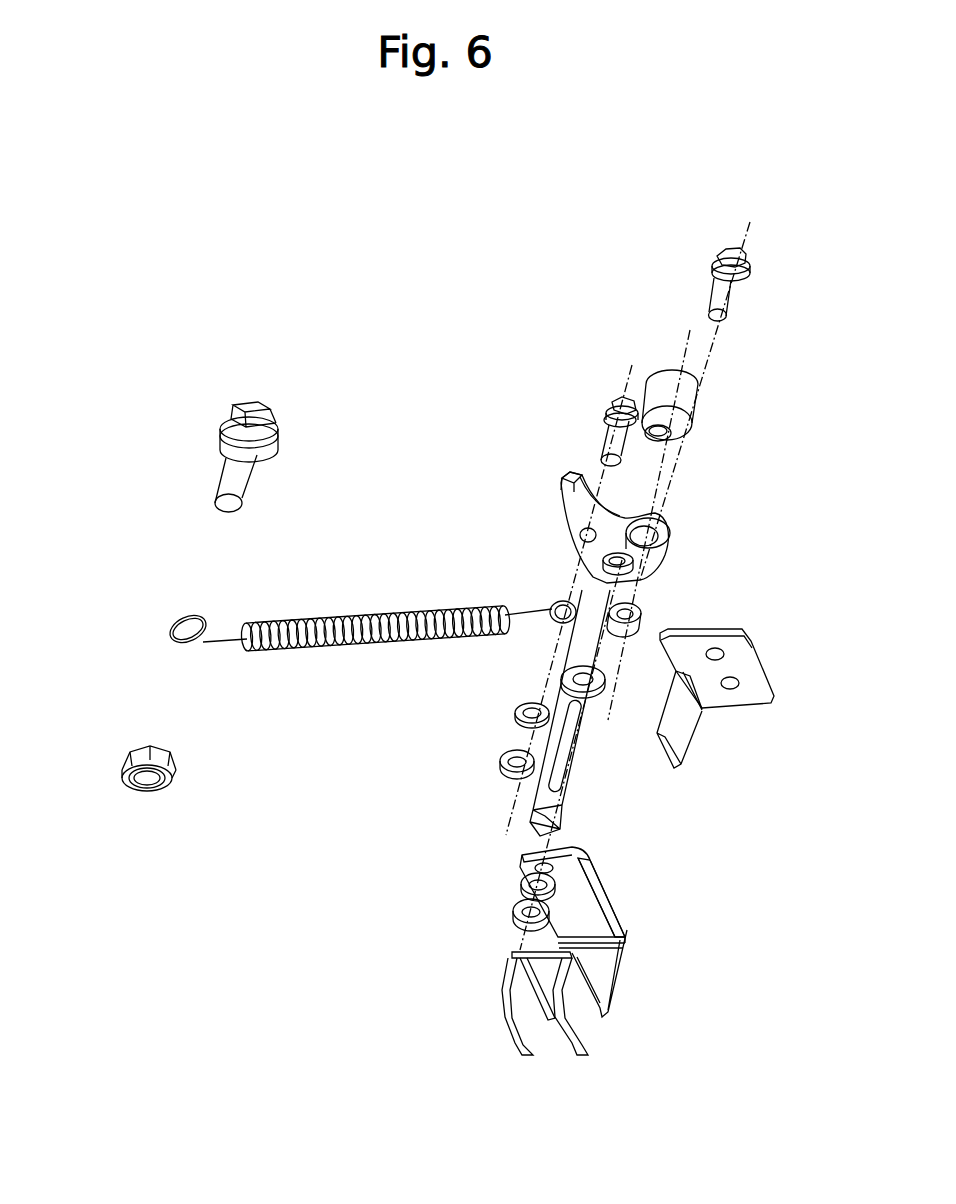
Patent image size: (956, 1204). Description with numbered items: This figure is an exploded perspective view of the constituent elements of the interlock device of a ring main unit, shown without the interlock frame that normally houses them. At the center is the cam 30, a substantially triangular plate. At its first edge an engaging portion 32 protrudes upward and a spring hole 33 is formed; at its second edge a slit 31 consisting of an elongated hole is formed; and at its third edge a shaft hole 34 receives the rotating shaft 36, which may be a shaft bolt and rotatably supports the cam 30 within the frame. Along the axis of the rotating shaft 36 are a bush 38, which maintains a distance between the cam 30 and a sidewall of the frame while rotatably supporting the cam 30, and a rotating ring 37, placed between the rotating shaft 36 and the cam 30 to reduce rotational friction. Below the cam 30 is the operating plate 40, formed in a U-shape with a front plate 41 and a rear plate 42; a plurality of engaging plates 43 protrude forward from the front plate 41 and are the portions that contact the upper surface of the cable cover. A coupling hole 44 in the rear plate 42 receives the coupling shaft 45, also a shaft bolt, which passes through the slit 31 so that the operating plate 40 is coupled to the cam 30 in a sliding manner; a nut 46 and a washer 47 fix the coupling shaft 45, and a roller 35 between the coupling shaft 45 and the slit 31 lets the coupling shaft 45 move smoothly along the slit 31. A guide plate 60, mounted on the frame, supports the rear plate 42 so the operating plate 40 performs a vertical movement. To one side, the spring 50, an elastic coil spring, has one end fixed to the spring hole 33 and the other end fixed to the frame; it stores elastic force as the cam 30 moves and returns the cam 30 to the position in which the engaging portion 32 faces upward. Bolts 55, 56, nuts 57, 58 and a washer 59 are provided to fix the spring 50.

The cam 30 is at (562, 513).
The slit 31 is at (660, 515).
The engaging portion 32 is at (565, 477).
The spring hole 33 is at (578, 533).
The shaft hole 34 is at (604, 562).
The roller 35 is at (636, 612).
The rotating shaft 36 is at (530, 816).
The rotating ring 37 is at (561, 678).
The bush 38 is at (692, 402).
The operating plate 40 is at (612, 962).
The front plate 41 is at (548, 980).
The rear plate 42 is at (590, 893).
The engaging plate 43 is at (578, 1025).
The coupling hole 44 is at (556, 868).
The coupling shaft 45 is at (735, 297).
The nut 46 is at (514, 916).
The washer 47 is at (522, 884).
The spring 50 is at (316, 616).
The bolt 55 is at (604, 422).
The bolt 56 is at (233, 415).
The nut 57 is at (501, 766).
The nut 58 is at (133, 748).
The washer 59 is at (514, 717).
The guide plate 60 is at (712, 633).